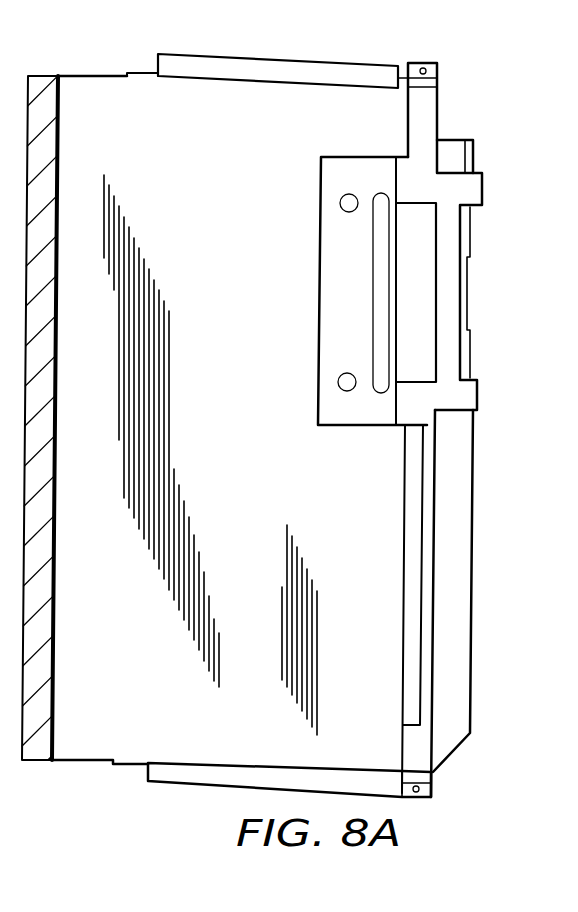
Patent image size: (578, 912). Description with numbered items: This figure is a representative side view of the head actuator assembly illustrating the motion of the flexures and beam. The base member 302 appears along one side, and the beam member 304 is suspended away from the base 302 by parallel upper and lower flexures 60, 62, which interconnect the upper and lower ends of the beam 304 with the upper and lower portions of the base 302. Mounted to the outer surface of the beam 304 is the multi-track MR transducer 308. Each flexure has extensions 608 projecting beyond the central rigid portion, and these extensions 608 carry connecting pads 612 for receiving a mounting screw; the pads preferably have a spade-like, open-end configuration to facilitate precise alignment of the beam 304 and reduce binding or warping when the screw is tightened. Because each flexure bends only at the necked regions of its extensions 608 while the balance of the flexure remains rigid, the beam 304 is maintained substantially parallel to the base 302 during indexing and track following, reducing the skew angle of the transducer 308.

The base member 302 is at (46, 75).
The upper flexure 60 is at (205, 55).
The connecting pads 612 is at (138, 78).
The extensions 608 is at (400, 96).
The beam member 304 is at (432, 102).
The multi-track MR transducer 308 is at (474, 236).
The lower flexure 62 is at (197, 789).